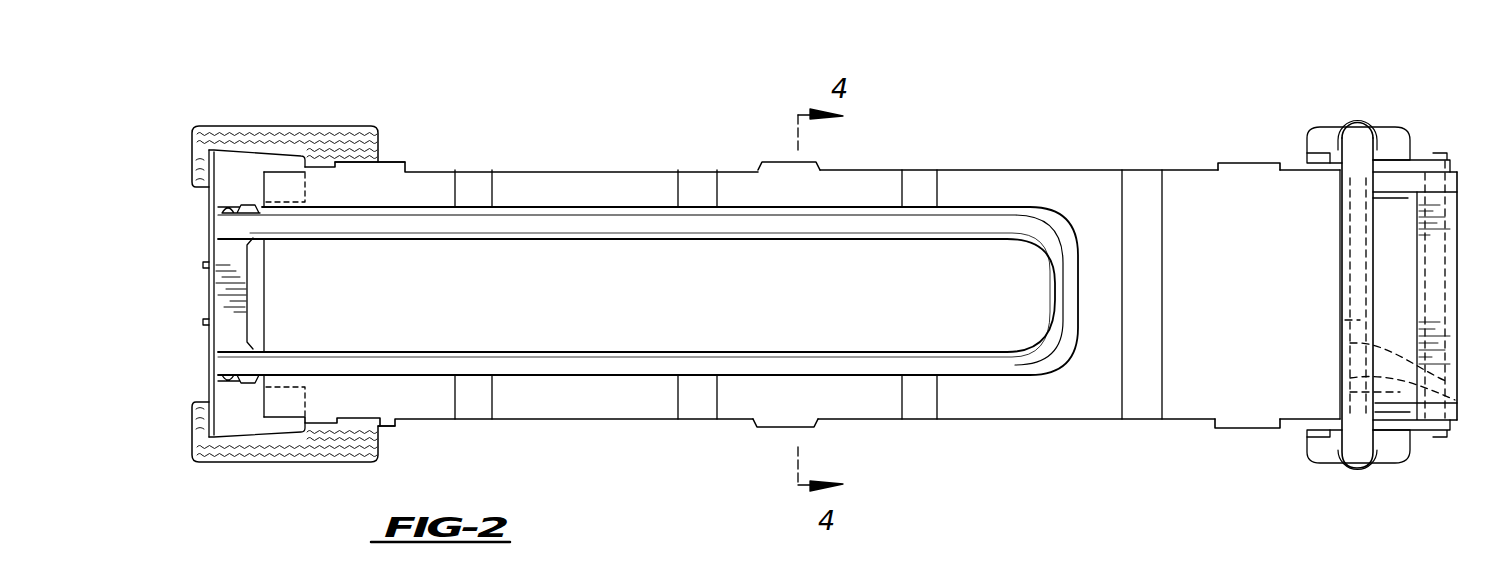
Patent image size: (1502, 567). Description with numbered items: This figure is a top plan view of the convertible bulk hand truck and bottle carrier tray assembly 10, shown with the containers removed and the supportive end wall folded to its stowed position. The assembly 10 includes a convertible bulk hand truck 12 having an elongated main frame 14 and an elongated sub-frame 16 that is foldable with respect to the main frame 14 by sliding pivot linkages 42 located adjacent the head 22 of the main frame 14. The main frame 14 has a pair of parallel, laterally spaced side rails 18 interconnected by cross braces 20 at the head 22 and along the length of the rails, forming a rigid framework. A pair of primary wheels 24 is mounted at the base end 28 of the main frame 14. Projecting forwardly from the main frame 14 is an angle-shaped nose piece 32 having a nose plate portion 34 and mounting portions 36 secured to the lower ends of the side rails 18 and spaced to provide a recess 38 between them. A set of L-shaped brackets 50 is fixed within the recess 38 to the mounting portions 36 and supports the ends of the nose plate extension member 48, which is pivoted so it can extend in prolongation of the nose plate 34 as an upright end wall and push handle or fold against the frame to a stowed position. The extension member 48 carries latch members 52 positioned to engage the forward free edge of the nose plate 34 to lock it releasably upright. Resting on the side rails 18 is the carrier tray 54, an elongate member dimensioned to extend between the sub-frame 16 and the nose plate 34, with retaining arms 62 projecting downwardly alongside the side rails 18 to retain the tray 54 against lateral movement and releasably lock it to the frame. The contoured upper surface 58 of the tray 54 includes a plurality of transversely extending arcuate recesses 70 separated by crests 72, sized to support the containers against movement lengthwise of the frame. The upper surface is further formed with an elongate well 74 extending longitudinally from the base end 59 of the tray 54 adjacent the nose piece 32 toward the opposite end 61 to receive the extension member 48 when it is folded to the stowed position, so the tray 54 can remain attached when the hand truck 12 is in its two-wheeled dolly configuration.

The convertible bulk hand truck and bottle carrier tray assembly 10 is at (1186, 150).
The convertible bulk hand truck 12 is at (1456, 186).
The main frame 14 is at (1424, 170).
The sub-frame 16 is at (1357, 122).
The side rails 18 is at (1396, 180).
The cross braces 20 is at (1462, 292).
The head of the main frame 22 is at (1462, 190).
The primary wheels 24 is at (382, 163).
The base end of the main frame 28 is at (262, 384).
The nose piece 32 is at (265, 203).
The nose plate portion 34 is at (210, 211).
The mounting portions 36 is at (298, 158).
The recess 38 is at (262, 203).
The sliding pivot linkages 42 is at (1325, 127).
The nose plate extension member 48 is at (210, 292).
The L-shaped brackets 50 is at (243, 200).
The latch members 52 is at (203, 265).
The carrier tray 54 is at (567, 171).
The upper surface of the tray 58 is at (657, 185).
The base end of the tray 59 is at (272, 314).
The opposite end of the tray 61 is at (1452, 360).
The retaining arms 62 is at (397, 167).
The arcuate recesses 70 is at (408, 196).
The crests 72 is at (284, 431).
The elongate well 74 is at (1046, 378).